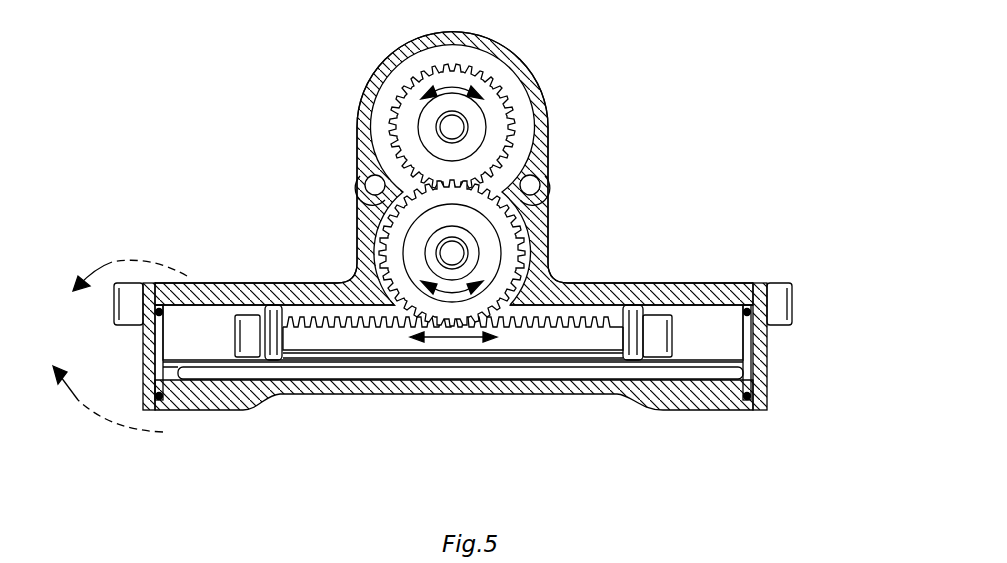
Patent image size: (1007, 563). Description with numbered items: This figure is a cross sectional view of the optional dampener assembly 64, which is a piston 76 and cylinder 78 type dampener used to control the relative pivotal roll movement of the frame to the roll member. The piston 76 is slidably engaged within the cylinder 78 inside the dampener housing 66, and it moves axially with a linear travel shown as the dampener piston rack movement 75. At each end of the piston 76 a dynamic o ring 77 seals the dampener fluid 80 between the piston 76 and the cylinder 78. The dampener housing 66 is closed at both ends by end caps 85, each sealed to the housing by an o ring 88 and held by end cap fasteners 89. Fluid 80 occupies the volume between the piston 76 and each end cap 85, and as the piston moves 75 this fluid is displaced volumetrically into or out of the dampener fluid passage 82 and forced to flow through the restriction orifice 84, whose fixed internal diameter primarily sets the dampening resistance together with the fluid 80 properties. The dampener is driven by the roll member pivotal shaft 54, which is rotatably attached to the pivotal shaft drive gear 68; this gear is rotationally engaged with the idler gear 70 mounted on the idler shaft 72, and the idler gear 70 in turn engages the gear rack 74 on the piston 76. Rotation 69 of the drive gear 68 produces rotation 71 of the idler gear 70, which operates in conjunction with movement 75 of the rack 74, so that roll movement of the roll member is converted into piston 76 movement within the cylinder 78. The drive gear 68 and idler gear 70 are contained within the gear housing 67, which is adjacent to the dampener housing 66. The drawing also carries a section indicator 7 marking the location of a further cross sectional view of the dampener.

The rotation direction arrows 7 is at (116, 346).
The roll member pivotal shaft 54 is at (455, 127).
The dampener assembly 64 is at (660, 128).
The dampener housing 66 is at (623, 397).
The housing 67 is at (363, 122).
The pivotal shaft drive gear 68 is at (402, 82).
The rotation movement 69 is at (457, 84).
The idler gear 70 is at (385, 218).
The rotation movement 71 is at (548, 203).
The idler shaft 72 is at (440, 250).
The gear rack 74 is at (557, 318).
The dampener piston rack movement 75 is at (454, 338).
The piston 76 is at (243, 318).
The dynamic o ring 77 is at (275, 365).
The cylinder 78 is at (218, 322).
The dampener fluid 80 is at (386, 372).
The dampener fluid passage 82 is at (703, 387).
The restriction orifice 84 is at (177, 381).
The dampener housing end cap 85 is at (143, 380).
The o ring 88 is at (165, 405).
The end cap fastener 89 is at (130, 285).